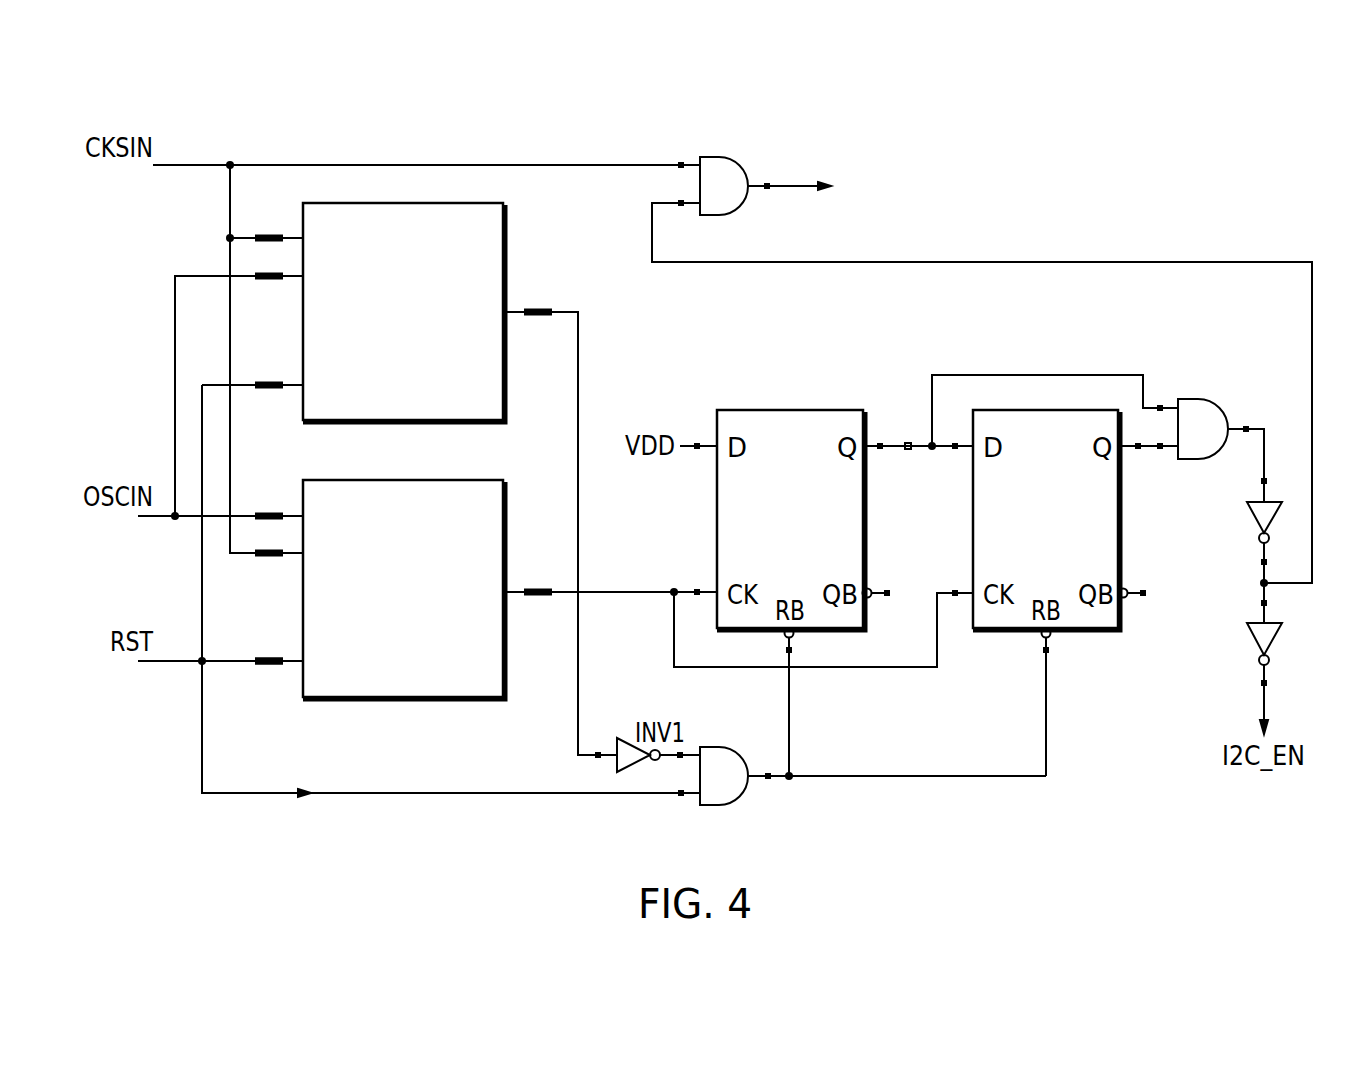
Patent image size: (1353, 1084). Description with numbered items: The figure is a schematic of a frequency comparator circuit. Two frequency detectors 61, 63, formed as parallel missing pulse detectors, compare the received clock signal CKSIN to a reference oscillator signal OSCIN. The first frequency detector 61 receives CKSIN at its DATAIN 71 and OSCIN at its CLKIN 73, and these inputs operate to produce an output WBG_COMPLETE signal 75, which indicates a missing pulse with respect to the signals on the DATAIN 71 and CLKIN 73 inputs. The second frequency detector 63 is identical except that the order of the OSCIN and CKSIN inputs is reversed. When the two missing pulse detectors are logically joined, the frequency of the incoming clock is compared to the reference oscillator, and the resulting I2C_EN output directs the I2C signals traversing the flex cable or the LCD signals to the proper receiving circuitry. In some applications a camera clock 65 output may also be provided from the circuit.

The frequency detector 61 is at (508, 238).
The frequency detector 63 is at (508, 516).
The camera clock 65 is at (902, 176).
The DATAIN 71 is at (172, 287).
The CLKIN 73 is at (228, 213).
The WBG_COMPLETE signal 75 is at (538, 312).